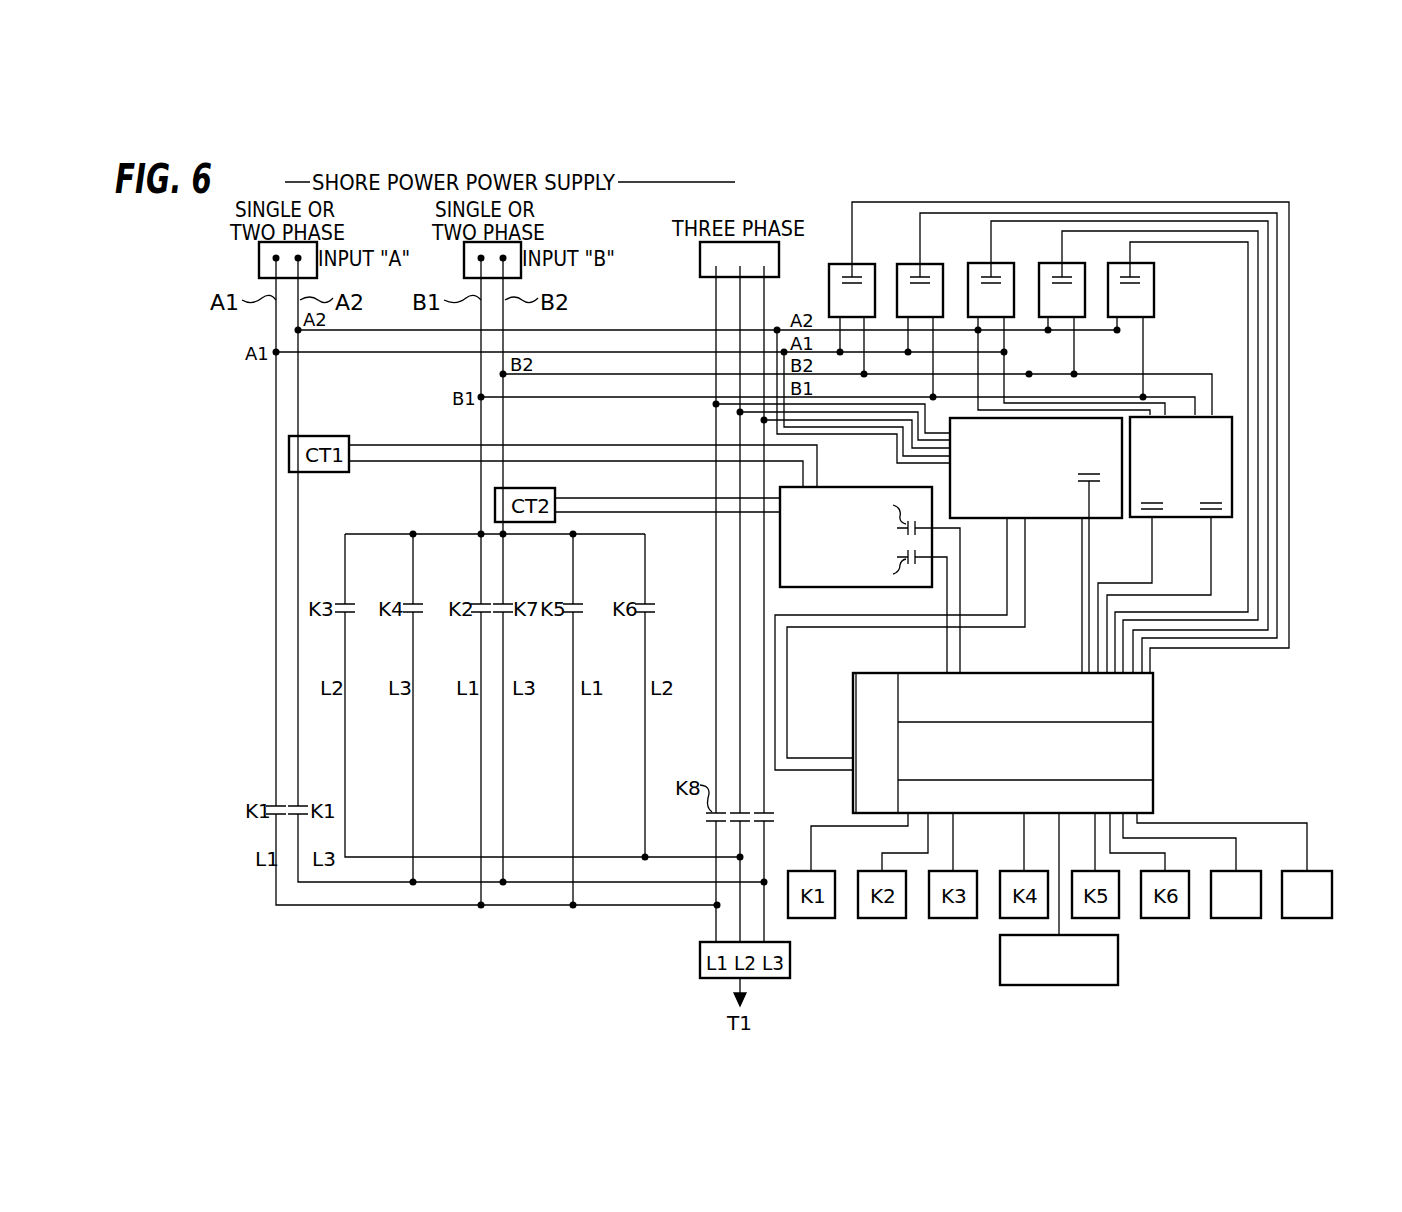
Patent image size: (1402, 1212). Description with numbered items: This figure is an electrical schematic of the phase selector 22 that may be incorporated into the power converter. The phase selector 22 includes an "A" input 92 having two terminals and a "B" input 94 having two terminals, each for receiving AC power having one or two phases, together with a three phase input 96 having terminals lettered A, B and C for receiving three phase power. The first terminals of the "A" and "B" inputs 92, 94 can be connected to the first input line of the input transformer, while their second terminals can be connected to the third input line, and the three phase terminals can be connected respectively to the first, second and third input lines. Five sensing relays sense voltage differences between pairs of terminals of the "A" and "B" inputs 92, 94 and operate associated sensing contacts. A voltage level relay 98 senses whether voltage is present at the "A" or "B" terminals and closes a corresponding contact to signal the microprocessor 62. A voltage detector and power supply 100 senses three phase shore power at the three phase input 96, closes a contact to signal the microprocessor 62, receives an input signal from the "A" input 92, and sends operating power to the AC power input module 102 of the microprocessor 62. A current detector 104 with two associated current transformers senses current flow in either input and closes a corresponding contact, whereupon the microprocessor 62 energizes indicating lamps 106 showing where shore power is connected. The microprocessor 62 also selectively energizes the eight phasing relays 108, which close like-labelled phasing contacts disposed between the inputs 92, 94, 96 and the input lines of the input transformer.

The phase selector 22 is at (1096, 193).
The microprocessor 62 is at (1009, 728).
The "A" input 92 is at (262, 260).
The "B" input 94 is at (466, 260).
The three phase input 96 is at (700, 256).
The voltage level relay 98 is at (1232, 443).
The voltage detector and power supply 100 is at (1092, 520).
The AC power input module 102 is at (860, 673).
The current detector 104 is at (876, 487).
The indicating lamps 106 is at (1120, 965).
The phasing relays 108 is at (1255, 918).